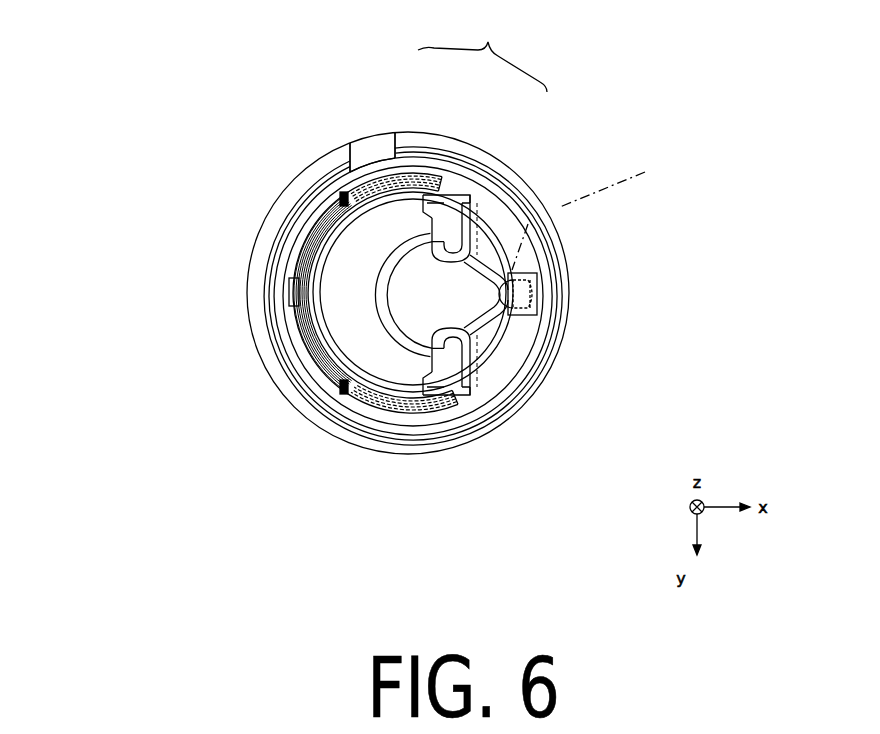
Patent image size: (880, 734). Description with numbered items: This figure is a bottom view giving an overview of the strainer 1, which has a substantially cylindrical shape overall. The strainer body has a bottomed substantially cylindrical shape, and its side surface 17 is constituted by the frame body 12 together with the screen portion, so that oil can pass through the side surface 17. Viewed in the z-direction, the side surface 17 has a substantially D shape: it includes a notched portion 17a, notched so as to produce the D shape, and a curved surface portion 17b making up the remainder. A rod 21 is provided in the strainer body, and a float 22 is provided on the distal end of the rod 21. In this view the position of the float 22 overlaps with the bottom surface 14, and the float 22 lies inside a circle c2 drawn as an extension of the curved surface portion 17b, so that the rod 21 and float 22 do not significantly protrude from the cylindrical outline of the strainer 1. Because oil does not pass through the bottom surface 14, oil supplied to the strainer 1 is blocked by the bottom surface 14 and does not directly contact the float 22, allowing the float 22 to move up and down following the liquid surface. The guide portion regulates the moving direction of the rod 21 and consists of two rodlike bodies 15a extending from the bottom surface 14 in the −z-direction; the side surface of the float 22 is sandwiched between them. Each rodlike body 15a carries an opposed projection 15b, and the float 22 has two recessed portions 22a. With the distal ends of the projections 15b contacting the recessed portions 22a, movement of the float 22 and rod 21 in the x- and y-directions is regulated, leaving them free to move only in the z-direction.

The strainer 1 is at (626, 73).
The frame body 12 is at (288, 295).
The bottom surface 14 is at (388, 372).
The rodlike bodies 15a is at (340, 190).
The projection 15b is at (345, 213).
The side surface 17 is at (448, 119).
The notched portion 17a is at (478, 195).
The curved surface portion 17b is at (423, 175).
The rod 21 is at (530, 282).
The float 22 is at (411, 303).
The recessed portions 22a is at (455, 258).
The circle c2 is at (588, 211).